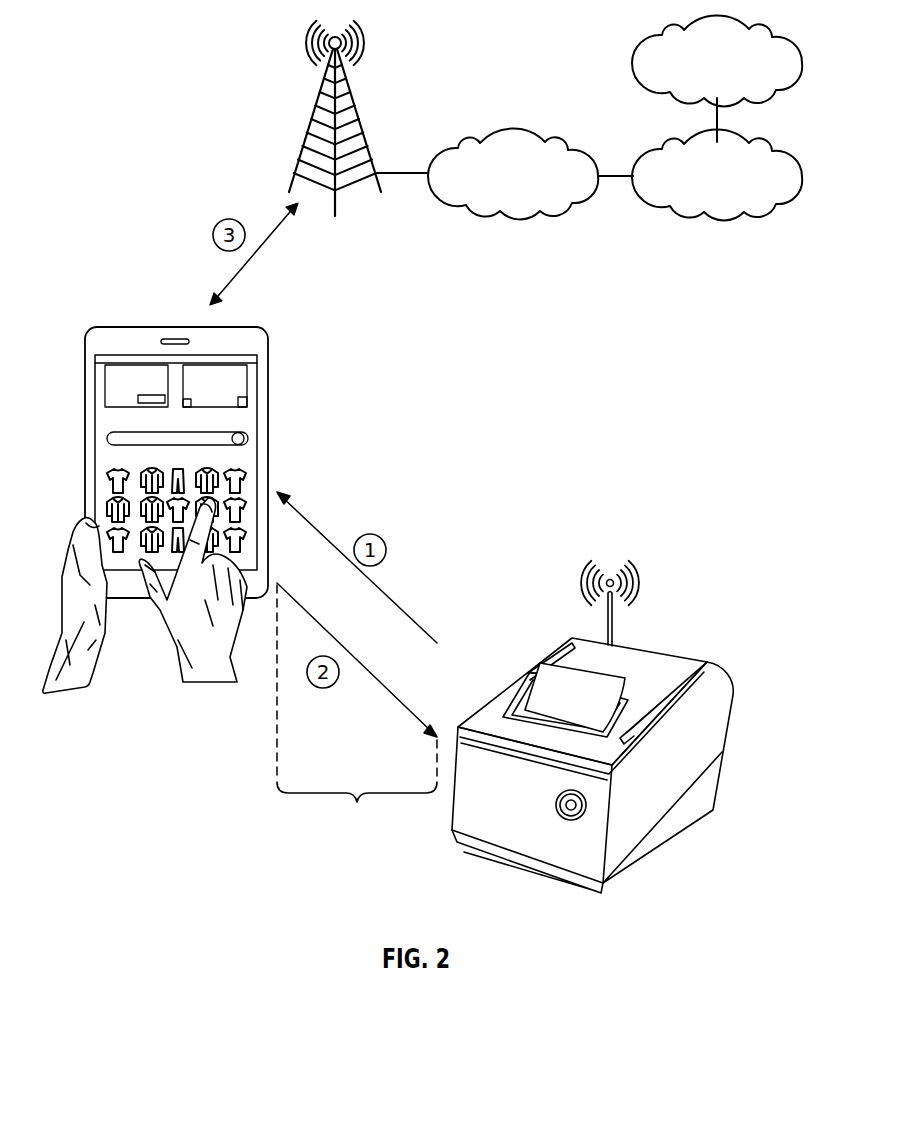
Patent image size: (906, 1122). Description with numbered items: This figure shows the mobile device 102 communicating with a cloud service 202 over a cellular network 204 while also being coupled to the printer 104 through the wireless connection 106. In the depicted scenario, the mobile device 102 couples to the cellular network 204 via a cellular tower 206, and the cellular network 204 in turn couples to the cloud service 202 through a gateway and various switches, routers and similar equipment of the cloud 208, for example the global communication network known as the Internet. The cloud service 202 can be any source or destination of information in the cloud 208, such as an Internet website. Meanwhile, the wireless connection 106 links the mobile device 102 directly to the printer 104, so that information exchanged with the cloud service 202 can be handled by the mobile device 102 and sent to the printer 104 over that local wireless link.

The mobile device 102 is at (268, 358).
The printer 104 is at (670, 650).
The wireless connection 106 is at (357, 709).
The cloud service 202 is at (717, 28).
The cellular network 204 is at (512, 140).
The cellular tower 206 is at (356, 115).
The cloud 208 is at (717, 212).